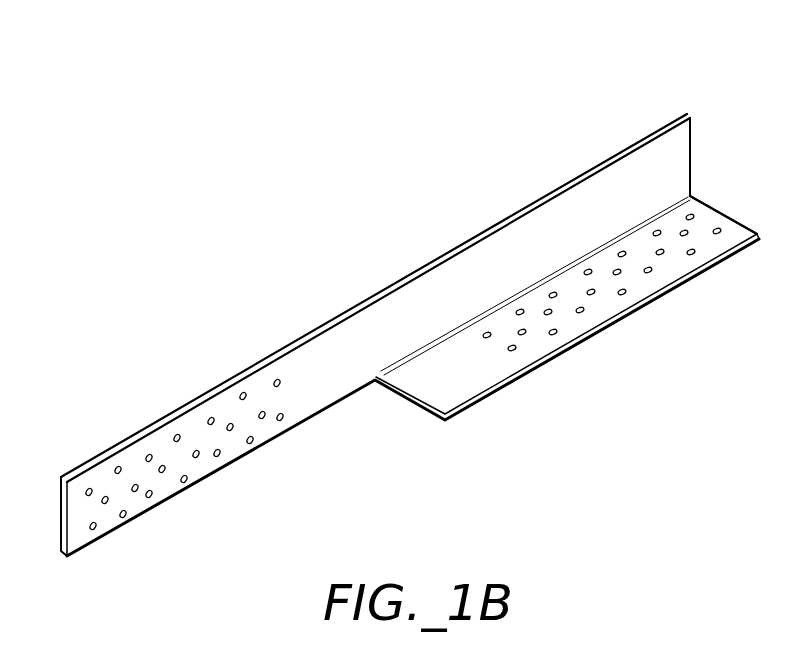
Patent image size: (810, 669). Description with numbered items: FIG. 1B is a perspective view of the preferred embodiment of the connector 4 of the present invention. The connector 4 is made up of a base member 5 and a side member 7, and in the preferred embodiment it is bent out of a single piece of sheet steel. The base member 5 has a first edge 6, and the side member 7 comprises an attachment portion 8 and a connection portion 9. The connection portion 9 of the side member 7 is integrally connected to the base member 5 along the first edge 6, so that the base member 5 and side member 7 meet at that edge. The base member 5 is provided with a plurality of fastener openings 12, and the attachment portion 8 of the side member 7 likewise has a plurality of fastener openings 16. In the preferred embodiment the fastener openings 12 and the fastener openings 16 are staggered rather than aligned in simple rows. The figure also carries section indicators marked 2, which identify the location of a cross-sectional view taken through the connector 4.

The section line 2- 2 is at (390, 294).
The connector 4 is at (386, 425).
The base member 5 is at (463, 412).
The first edge 6 is at (662, 207).
The side member 7 is at (378, 282).
The attachment portion 8 is at (190, 405).
The connection portion 9 is at (565, 183).
The fastener openings 12 is at (516, 349).
The fastener openings 16 is at (96, 527).